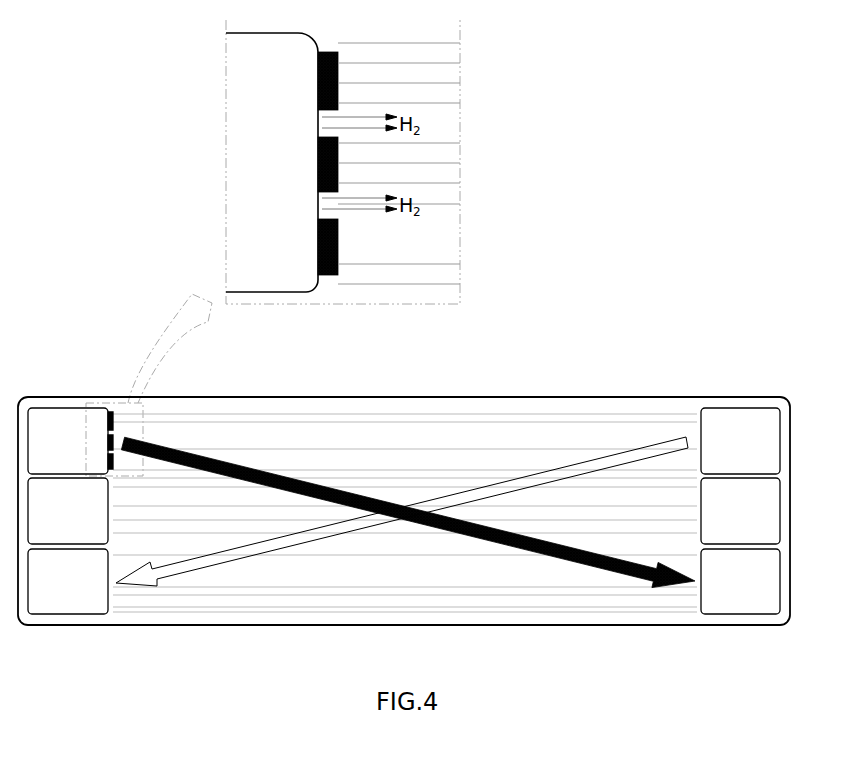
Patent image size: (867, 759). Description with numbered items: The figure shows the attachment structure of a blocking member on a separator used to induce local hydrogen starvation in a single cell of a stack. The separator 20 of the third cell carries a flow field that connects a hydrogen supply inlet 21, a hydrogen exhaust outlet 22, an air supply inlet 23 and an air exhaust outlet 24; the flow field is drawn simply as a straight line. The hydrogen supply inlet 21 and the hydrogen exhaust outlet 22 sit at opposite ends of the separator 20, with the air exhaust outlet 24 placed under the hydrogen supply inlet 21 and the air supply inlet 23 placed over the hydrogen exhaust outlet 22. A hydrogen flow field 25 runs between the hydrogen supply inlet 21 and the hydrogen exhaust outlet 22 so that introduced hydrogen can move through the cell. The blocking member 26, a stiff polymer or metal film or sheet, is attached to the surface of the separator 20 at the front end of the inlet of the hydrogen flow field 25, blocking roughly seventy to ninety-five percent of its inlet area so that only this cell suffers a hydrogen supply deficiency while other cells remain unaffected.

The separator of third cell 20 is at (556, 386).
The hydrogen supply inlet 21 is at (48, 430).
The hydrogen exhaust outlet 22 is at (743, 601).
The air supply inlet 23 is at (743, 425).
The air exhaust outlet 24 is at (68, 590).
The hydrogen flow field 25 is at (428, 440).
The blocking member 26 is at (320, 78).